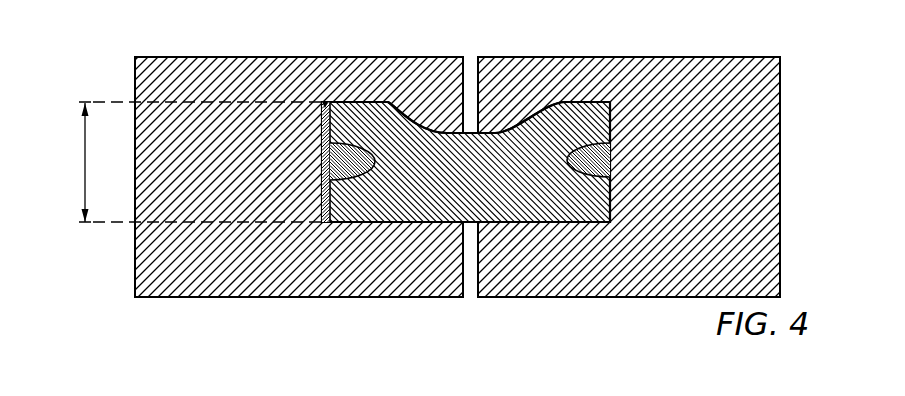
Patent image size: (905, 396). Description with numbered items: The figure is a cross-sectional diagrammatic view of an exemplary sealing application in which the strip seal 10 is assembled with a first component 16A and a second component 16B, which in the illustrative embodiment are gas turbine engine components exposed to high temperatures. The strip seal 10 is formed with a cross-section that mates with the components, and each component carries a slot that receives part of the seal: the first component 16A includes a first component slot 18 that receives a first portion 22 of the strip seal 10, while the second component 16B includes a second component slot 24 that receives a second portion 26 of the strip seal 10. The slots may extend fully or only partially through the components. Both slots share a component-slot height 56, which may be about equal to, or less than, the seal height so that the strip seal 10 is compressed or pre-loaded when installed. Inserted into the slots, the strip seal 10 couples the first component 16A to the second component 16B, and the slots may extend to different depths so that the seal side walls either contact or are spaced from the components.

The strip seal 10 is at (402, 230).
The first component 16A is at (192, 57).
The second component 16B is at (727, 57).
The first component slot 18 is at (325, 103).
The first portion 22 is at (420, 122).
The second component slot 24 is at (600, 168).
The second portion 26 is at (583, 110).
The component-slot height 56 is at (84, 163).